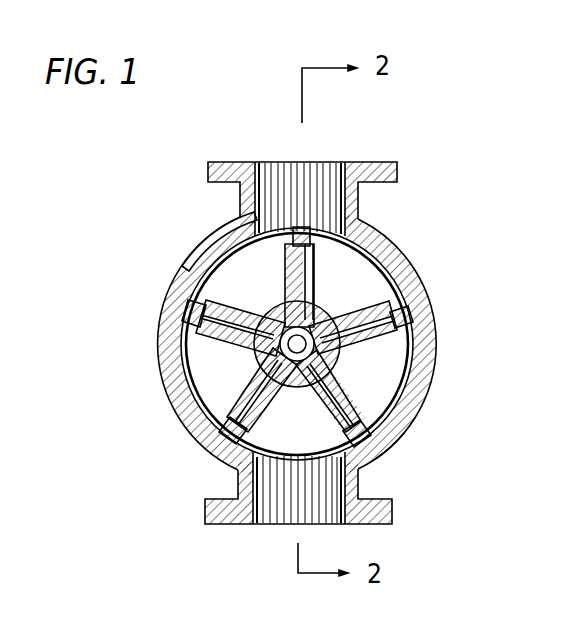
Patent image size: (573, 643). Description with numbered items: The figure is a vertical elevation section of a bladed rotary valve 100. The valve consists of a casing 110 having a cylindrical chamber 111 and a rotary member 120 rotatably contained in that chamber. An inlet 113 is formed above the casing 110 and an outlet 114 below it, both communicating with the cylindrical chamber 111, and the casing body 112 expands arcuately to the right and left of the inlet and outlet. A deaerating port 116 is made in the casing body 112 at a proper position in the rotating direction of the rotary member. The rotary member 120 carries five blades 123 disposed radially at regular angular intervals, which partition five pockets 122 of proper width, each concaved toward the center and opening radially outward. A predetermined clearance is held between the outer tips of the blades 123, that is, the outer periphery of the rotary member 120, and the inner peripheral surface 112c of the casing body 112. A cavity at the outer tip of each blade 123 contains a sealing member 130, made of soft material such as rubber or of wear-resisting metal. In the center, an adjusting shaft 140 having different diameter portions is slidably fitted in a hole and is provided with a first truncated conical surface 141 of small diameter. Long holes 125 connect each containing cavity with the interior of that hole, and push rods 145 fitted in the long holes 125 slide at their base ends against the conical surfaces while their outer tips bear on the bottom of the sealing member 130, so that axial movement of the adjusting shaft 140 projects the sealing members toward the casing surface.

The rotary valve 100 is at (396, 239).
The casing 110 is at (421, 335).
The cylindrical chamber 111 is at (400, 257).
The casing body 112 is at (158, 338).
The inner peripheral surface 112c is at (200, 262).
The inlet 113 is at (322, 174).
The outlet 114 is at (278, 508).
The deaerating port 116 is at (407, 442).
The rotary member 120 is at (262, 358).
The pockets 122 is at (390, 375).
The blades 123 is at (405, 354).
The long holes 125 is at (346, 318).
The sealing member 130 is at (394, 316).
The adjusting shaft 140 is at (316, 356).
The first truncated conical surface 141 is at (196, 430).
The push rods 145 is at (378, 300).